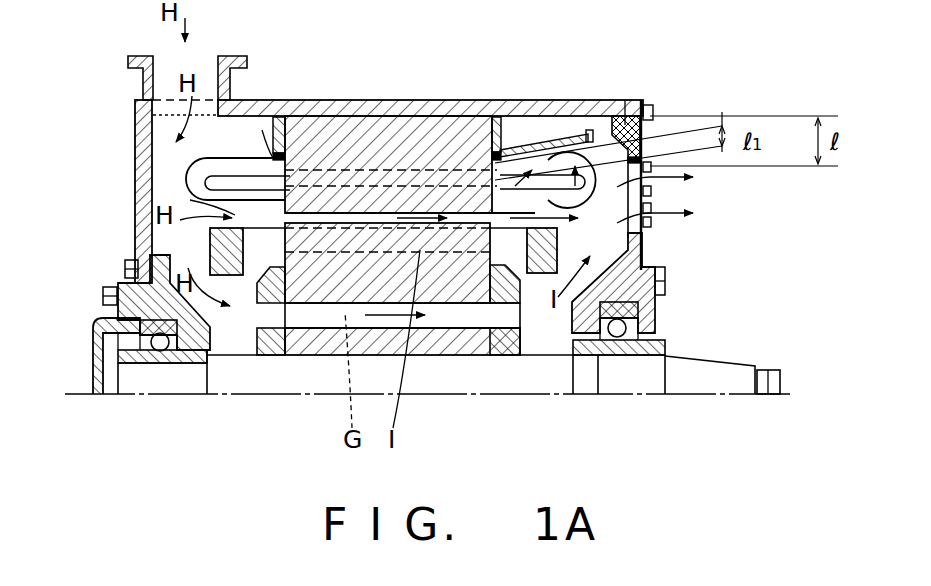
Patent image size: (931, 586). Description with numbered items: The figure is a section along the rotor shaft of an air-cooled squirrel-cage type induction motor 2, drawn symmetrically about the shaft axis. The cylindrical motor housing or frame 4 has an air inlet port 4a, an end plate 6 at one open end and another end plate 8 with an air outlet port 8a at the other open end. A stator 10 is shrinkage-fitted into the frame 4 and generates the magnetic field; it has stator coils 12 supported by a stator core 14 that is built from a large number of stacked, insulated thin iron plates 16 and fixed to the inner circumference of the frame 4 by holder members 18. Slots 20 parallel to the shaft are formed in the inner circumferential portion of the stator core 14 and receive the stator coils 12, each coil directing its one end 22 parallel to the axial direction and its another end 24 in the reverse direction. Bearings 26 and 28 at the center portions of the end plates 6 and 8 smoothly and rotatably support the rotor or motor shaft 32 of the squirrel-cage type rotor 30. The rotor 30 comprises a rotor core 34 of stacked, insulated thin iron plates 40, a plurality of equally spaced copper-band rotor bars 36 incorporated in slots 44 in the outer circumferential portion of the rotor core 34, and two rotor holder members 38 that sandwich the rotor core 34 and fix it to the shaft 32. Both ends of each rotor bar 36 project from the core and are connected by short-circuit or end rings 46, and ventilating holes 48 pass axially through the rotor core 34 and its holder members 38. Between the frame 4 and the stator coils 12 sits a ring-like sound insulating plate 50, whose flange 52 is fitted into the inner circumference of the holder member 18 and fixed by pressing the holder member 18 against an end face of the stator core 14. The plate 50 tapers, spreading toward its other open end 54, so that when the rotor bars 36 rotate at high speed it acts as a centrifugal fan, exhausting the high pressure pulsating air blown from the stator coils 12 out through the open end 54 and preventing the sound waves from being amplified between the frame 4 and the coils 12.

The squirrel-cage type induction motor 2 is at (660, 93).
The motor housing or frame 4 is at (483, 110).
The air inlet port 4a is at (207, 66).
The end plate 6 is at (135, 115).
The end plate 8 is at (652, 140).
The air outlet port 8a is at (655, 195).
The stator 10 is at (272, 158).
The stator coils 12 is at (245, 100).
The stator core 14 is at (410, 130).
The thin iron plates 16 is at (352, 172).
The holder members 18 is at (300, 98).
The slots 20 is at (401, 135).
The one end of stator coil 22 is at (185, 172).
The another end of stator coil 24 is at (606, 215).
The bearing 26 is at (130, 387).
The bearing 28 is at (628, 357).
The squirrel-cage type rotor 30 is at (256, 298).
The rotor or motor shaft 32 is at (446, 375).
The rotor core 34 is at (265, 352).
The rotor bars 36 is at (190, 200).
The rotor holder members 38 is at (162, 368).
The thin iron plates 40 is at (388, 341).
The slots 44 is at (330, 292).
The short-circuit or end rings 46 is at (212, 235).
The ventilating holes 48 is at (478, 300).
The sound insulating plate 50 is at (584, 150).
The flange 52 is at (530, 130).
The open end 54 is at (620, 105).